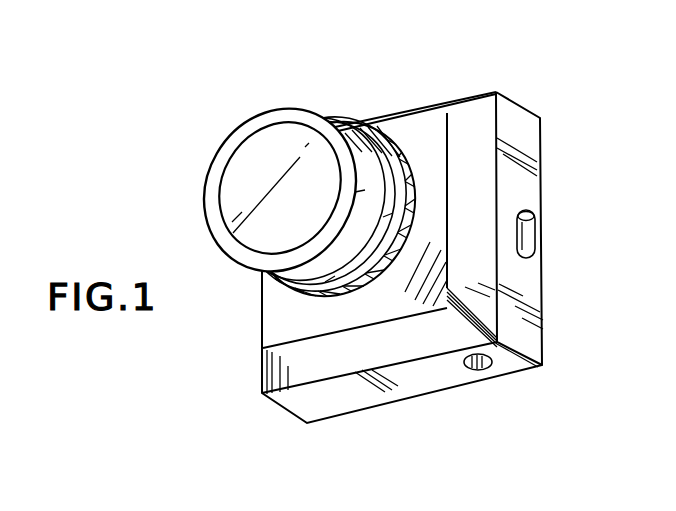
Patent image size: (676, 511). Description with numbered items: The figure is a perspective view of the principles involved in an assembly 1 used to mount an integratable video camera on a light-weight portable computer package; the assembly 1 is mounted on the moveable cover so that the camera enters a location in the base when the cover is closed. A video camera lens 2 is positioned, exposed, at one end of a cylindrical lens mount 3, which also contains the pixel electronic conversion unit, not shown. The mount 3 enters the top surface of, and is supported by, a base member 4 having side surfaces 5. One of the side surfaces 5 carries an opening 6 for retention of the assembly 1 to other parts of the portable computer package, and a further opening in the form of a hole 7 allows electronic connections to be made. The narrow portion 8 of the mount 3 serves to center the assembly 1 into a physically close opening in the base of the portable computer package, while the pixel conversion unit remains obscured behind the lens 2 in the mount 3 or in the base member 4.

The assembly 1 is at (386, 241).
The video camera lens 2 is at (280, 190).
The lens mount 3 is at (380, 158).
The base member 4 is at (480, 124).
The side surfaces 5 is at (528, 147).
The opening 6 is at (525, 237).
The hole 7 is at (485, 368).
The narrow portion 8 is at (315, 283).